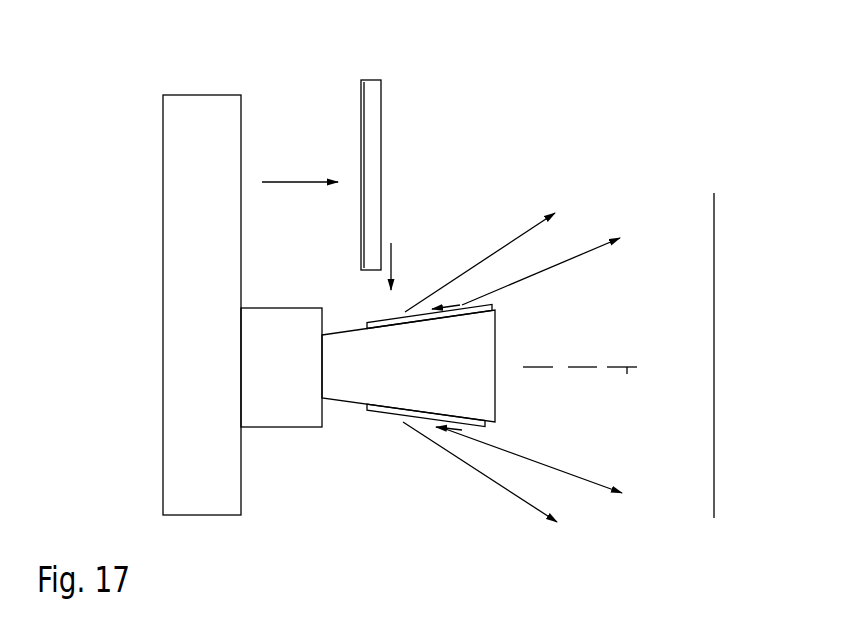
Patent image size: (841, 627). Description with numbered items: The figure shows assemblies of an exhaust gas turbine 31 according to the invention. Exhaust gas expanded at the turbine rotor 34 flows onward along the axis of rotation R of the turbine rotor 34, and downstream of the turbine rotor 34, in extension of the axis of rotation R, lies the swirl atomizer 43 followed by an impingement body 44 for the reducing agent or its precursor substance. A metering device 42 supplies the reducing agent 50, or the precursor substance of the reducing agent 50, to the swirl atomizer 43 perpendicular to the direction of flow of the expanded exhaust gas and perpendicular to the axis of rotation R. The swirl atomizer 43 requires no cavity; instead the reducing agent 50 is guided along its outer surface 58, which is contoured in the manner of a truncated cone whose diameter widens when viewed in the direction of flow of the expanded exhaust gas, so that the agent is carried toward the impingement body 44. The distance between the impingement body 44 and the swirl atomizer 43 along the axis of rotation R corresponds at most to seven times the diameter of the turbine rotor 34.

The exhaust gas turbine 31 is at (480, 87).
The turbine rotor 34 is at (162, 450).
The metering device 42 is at (381, 138).
The swirl atomizer 43 is at (496, 342).
The impingement body 44 is at (712, 218).
The reducing agent 50 is at (395, 258).
The outer surface 58 is at (352, 407).
The axis of rotation R is at (627, 374).